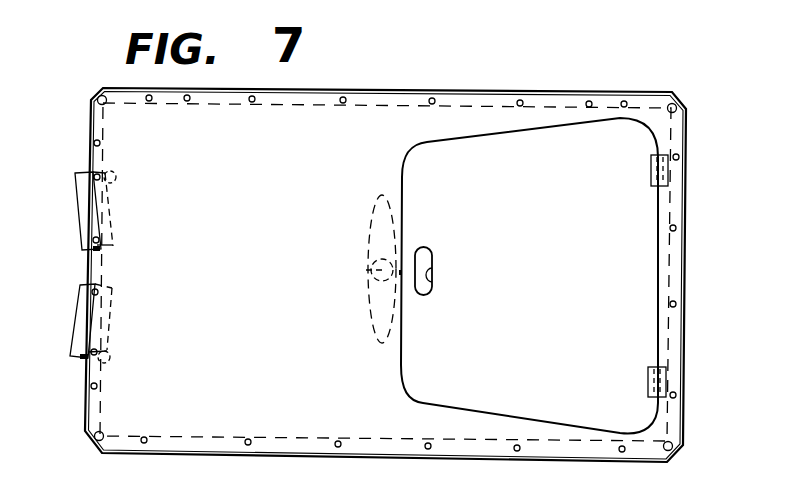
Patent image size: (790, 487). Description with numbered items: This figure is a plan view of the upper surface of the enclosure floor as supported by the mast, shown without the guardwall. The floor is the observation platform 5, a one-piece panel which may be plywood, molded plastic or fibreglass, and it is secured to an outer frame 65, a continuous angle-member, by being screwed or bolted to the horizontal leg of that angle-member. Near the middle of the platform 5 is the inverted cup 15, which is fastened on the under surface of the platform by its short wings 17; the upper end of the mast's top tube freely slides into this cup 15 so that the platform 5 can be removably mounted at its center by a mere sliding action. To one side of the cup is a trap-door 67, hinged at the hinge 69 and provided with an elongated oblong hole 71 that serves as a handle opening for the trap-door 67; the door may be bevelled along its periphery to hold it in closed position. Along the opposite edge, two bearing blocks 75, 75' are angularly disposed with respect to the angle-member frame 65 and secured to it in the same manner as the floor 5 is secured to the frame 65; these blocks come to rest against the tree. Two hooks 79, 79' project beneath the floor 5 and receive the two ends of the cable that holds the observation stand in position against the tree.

The observation platform 5 is at (207, 271).
The inverted cup 15 is at (368, 270).
The short wings 17 is at (370, 219).
The outer frame 65 is at (397, 88).
The trap-door 67 is at (548, 343).
The hinge 69 is at (668, 175).
The elongated oblong hole 71 is at (432, 280).
The bearing block 75 is at (65, 211).
The bearing block 75' is at (66, 321).
The hook 79 is at (132, 162).
The hook 79' is at (139, 351).